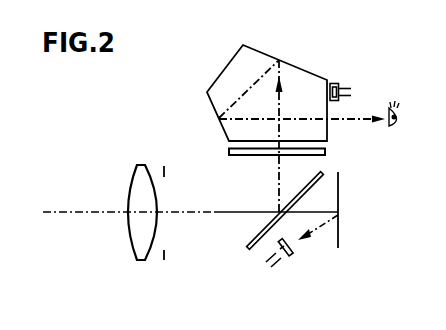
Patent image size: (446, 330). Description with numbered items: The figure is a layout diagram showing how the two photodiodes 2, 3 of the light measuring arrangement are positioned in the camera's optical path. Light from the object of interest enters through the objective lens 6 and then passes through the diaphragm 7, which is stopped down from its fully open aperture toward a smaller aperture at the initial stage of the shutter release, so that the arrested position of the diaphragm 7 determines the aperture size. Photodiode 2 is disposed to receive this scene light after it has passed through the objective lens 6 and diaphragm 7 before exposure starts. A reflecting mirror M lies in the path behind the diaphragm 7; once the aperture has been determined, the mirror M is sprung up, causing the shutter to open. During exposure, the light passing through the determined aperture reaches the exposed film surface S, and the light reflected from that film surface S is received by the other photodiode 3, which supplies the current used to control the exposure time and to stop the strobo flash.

The photodiode 2 is at (338, 82).
The photodiode 3 is at (292, 257).
The objective lens 6 is at (137, 257).
The diaphragm 7 is at (164, 260).
The reflecting mirror M is at (272, 213).
The exposed film surface S is at (340, 230).